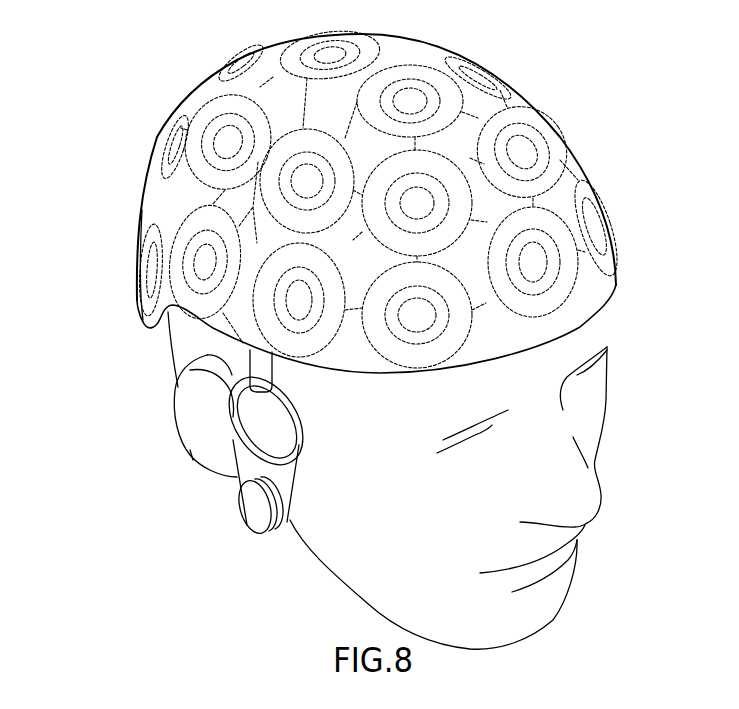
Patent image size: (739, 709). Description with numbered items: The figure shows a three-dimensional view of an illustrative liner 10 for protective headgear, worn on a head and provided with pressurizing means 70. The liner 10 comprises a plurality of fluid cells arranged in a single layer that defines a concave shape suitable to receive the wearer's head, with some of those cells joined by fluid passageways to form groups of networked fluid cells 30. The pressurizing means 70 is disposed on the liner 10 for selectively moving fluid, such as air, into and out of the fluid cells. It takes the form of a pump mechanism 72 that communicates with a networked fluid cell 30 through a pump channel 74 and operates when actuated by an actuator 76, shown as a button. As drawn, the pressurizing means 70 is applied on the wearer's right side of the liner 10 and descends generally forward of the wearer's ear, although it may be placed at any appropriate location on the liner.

The liner 10 is at (110, 204).
The networked fluid cell 30 is at (165, 315).
The pressurizing means 70 is at (306, 460).
The pump mechanism 72 is at (300, 420).
The pump channel 74 is at (263, 378).
The actuator 76 is at (250, 517).